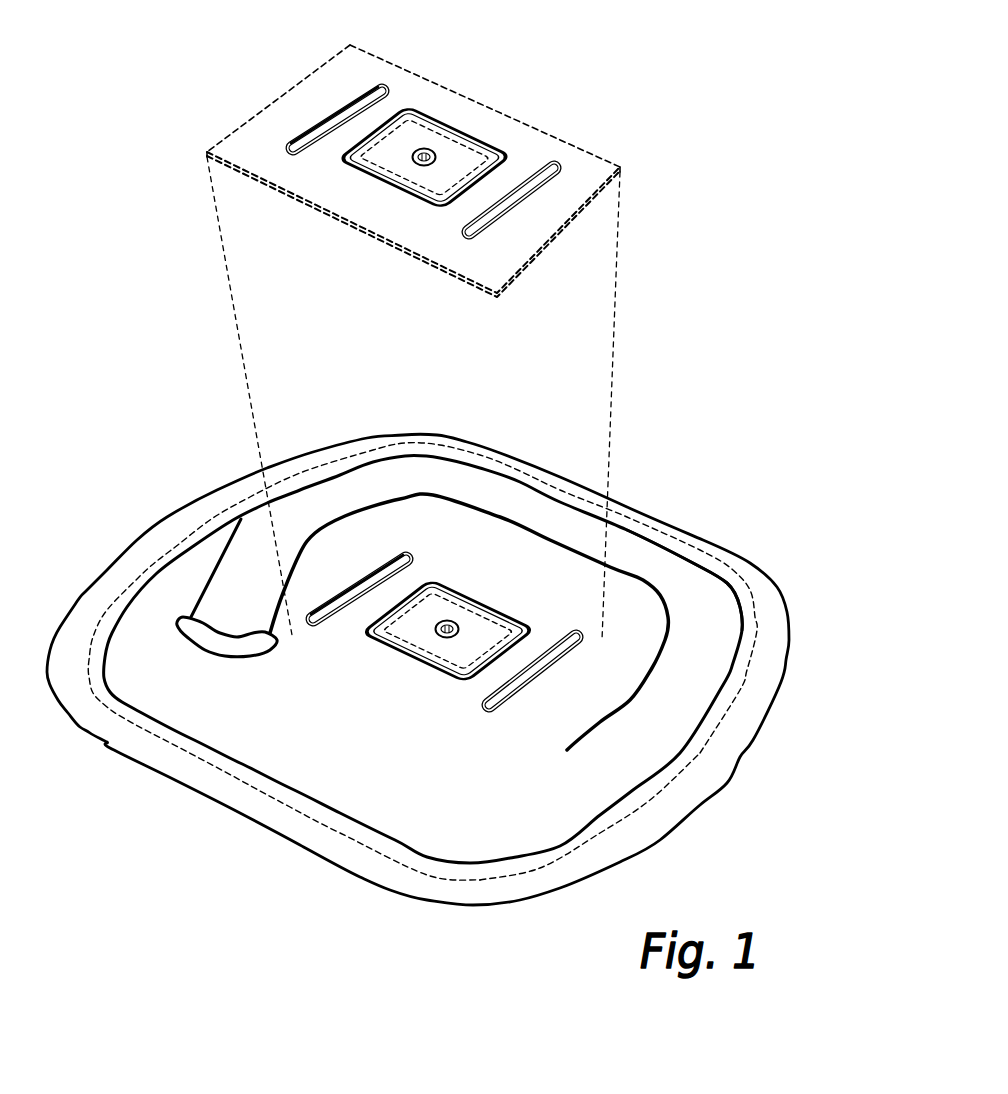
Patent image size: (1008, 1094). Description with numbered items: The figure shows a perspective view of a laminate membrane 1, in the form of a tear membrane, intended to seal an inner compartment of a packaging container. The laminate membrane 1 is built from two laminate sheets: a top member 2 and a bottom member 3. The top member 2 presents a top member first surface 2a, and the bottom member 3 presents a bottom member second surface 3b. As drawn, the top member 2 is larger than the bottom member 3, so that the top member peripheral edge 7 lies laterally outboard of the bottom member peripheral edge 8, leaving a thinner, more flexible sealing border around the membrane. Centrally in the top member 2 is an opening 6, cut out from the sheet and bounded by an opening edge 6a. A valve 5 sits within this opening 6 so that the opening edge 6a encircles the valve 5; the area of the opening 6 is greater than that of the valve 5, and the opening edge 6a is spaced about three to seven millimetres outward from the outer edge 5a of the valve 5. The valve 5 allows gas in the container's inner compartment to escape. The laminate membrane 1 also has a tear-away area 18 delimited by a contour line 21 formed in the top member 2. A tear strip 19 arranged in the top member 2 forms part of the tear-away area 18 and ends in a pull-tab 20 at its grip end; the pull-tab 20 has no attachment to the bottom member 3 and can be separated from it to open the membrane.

The laminate membrane 1 is at (462, 680).
The top member 2 is at (725, 745).
The top member first surface 2a is at (720, 659).
The bottom member 3 is at (654, 740).
The bottom member second surface 3b is at (491, 835).
The valve 5 is at (446, 147).
The outer edge of the valve 5a is at (478, 178).
The opening 6 is at (423, 135).
The opening edge 6a is at (392, 190).
The top member peripheral edge 7 is at (725, 780).
The bottom member peripheral edge 8 is at (613, 826).
The tear-away area 18 is at (445, 835).
The tear strip 19 is at (335, 497).
The pull-tab 20 is at (233, 613).
The contour line 21 is at (727, 582).